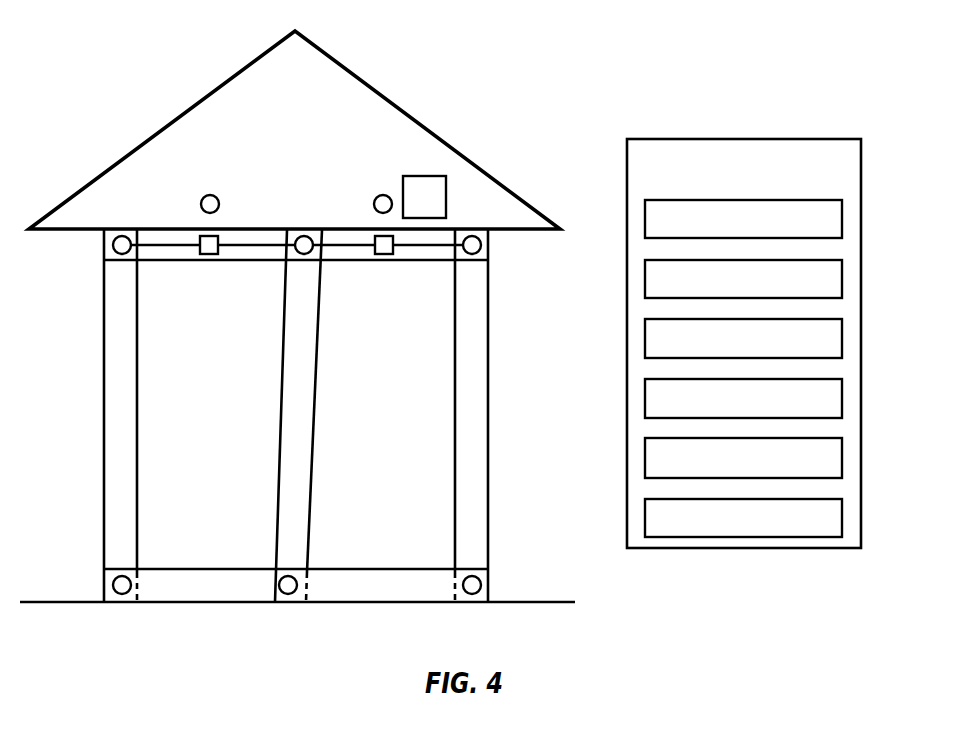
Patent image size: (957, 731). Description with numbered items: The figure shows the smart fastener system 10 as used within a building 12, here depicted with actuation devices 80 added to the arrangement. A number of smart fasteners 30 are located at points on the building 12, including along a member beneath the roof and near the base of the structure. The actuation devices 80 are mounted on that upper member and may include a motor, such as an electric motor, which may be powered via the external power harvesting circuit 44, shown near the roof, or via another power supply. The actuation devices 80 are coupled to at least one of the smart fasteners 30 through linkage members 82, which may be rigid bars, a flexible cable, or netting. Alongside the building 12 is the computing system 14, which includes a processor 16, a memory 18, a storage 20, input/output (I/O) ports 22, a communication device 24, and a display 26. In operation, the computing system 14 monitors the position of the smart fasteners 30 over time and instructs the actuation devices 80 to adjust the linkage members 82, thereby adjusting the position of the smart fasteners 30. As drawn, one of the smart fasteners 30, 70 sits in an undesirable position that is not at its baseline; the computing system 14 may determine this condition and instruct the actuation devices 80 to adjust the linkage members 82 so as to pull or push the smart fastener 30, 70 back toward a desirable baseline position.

The smart fastener system 10 is at (158, 50).
The building 12 is at (368, 84).
The computing system 14 is at (745, 139).
The processor 16 is at (842, 214).
The memory 18 is at (842, 274).
The storage 20 is at (842, 334).
The input/output (I/O) ports 22 is at (842, 394).
The communication device 24 is at (842, 454).
The display 26 is at (842, 514).
The smart fasteners 30 is at (205, 196).
The external power harvesting circuit 44 is at (425, 176).
The smart fastener 70 is at (307, 254).
The actuation devices 80 is at (208, 254).
The linkage members 82 is at (350, 245).